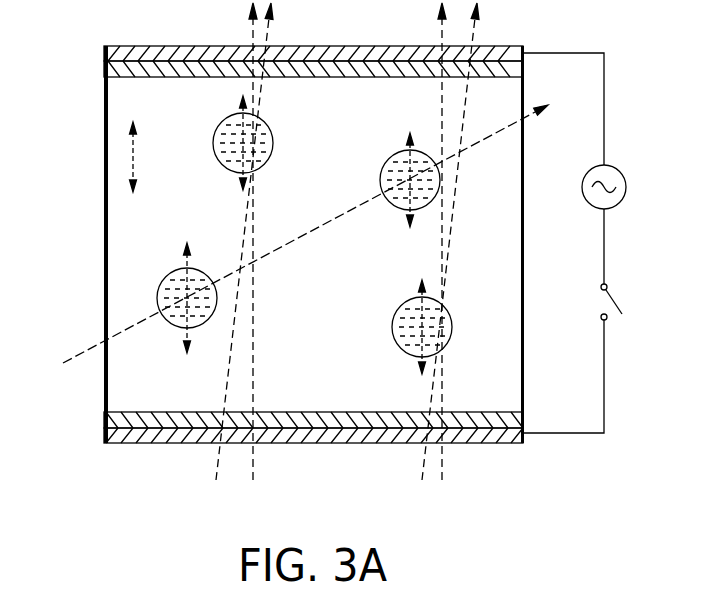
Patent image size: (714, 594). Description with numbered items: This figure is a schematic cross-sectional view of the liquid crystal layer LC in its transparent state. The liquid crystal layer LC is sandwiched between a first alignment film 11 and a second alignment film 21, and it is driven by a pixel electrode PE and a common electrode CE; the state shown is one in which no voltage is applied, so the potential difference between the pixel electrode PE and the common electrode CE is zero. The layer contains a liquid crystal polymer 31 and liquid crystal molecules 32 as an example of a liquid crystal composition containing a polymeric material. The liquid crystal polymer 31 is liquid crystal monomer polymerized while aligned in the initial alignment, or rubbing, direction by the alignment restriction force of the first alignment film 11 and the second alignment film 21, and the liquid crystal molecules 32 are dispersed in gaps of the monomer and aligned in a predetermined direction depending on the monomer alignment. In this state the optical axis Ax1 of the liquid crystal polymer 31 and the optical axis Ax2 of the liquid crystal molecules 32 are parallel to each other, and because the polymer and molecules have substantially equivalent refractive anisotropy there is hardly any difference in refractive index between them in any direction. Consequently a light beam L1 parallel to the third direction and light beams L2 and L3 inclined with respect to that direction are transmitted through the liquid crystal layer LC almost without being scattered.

The common electrode CE is at (104, 50).
The second alignment film 21 is at (104, 66).
The first alignment film 11 is at (104, 421).
The pixel electrode PE is at (104, 433).
The liquid crystal polymer 31 is at (115, 265).
The liquid crystal molecules 32 is at (158, 290).
The optical axis Ax1 is at (128, 158).
The optical axis Ax2 is at (182, 262).
The liquid crystal layer LC is at (502, 249).
The light beam L1 is at (348, 260).
The light beam L2 is at (339, 260).
The light beam L3 is at (291, 241).